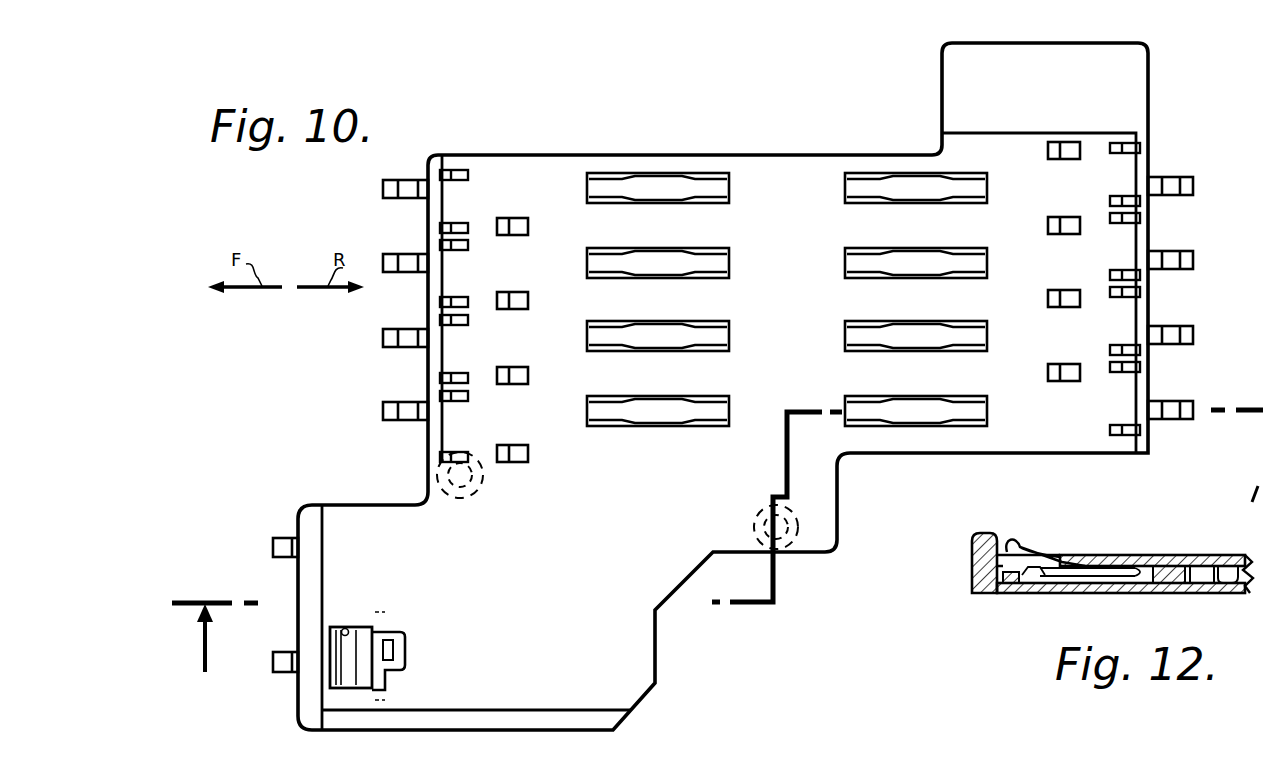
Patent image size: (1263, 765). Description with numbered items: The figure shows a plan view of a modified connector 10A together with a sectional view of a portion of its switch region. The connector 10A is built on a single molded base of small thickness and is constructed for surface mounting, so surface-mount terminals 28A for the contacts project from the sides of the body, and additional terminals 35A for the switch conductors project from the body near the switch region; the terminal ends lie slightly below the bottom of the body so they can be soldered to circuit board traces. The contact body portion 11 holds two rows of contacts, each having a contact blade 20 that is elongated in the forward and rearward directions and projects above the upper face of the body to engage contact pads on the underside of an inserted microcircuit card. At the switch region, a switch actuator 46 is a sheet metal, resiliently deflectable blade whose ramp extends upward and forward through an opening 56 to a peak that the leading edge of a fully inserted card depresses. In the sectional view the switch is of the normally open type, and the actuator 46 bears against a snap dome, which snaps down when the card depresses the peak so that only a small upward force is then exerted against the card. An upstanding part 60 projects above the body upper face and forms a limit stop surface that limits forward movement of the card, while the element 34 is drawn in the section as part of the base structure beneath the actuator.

In FIG. 10, the modified connector 10A is at (795, 567).
In FIG. 10, the contact blade 20 is at (720, 186).
In FIG. 10, the surface-mount terminal 28A is at (1192, 178).
In FIG. 10, the additional terminal 35A is at (272, 547).
In FIG. 10, the opening 56 is at (346, 629).
In FIG. 10, the switch actuator 46 is at (357, 672).
In FIG. 12, the switch actuator 46 is at (1012, 548).
In FIG. 10, the contact body portion 11 is at (717, 562).
In FIG. 12, the upstanding part 60 is at (970, 549).
In FIG. 12, the base plate 34 is at (1066, 592).